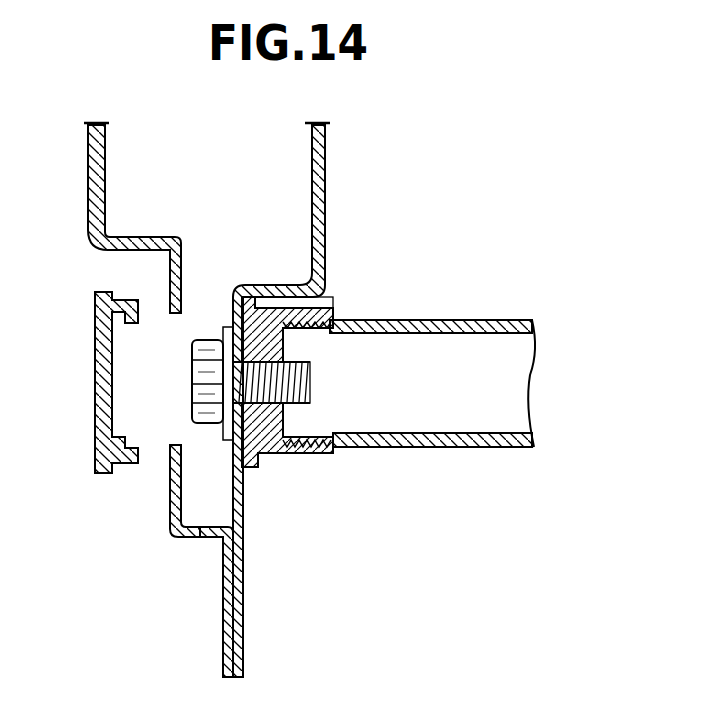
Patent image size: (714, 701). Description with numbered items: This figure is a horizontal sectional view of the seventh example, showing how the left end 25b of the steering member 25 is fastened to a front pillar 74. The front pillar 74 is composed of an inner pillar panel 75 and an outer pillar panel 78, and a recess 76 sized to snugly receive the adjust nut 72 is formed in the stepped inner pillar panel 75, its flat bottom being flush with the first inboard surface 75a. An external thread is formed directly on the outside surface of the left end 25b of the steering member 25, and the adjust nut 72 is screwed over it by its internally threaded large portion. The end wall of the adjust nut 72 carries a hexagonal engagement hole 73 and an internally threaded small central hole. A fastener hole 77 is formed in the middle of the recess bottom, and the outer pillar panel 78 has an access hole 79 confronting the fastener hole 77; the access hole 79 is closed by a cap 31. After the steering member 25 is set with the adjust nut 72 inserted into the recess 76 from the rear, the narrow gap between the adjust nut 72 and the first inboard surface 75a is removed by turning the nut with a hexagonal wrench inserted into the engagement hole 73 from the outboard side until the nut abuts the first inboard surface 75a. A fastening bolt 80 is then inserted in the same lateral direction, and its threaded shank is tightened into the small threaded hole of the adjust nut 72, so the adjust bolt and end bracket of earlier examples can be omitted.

The steering member 25 is at (533, 393).
The left end of the steering member 25b is at (437, 447).
The cap 31 is at (95, 397).
The adjust nut 72 is at (280, 455).
The hexagonal engagement hole 73 is at (268, 345).
The front pillar 74 is at (182, 561).
The inner pillar panel 75 is at (182, 537).
The first inboard surface 75a is at (243, 625).
The recess 76 is at (292, 300).
The fastener hole 77 is at (222, 437).
The outer pillar panel 78 is at (173, 502).
The access hole 79 is at (174, 445).
The fastening bolt 80 is at (192, 390).